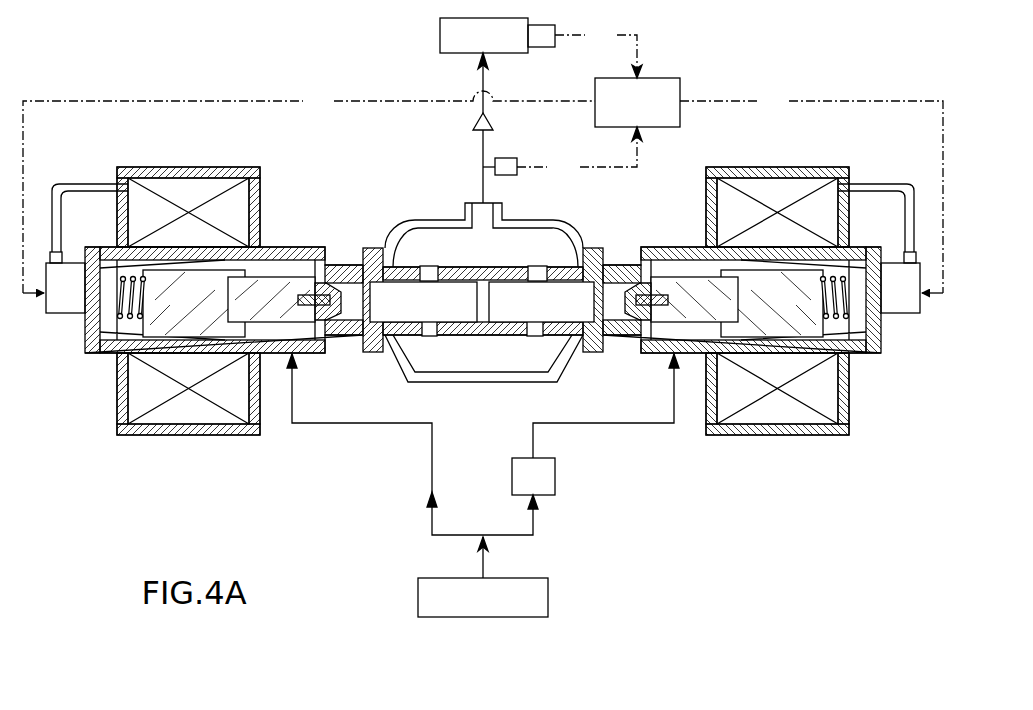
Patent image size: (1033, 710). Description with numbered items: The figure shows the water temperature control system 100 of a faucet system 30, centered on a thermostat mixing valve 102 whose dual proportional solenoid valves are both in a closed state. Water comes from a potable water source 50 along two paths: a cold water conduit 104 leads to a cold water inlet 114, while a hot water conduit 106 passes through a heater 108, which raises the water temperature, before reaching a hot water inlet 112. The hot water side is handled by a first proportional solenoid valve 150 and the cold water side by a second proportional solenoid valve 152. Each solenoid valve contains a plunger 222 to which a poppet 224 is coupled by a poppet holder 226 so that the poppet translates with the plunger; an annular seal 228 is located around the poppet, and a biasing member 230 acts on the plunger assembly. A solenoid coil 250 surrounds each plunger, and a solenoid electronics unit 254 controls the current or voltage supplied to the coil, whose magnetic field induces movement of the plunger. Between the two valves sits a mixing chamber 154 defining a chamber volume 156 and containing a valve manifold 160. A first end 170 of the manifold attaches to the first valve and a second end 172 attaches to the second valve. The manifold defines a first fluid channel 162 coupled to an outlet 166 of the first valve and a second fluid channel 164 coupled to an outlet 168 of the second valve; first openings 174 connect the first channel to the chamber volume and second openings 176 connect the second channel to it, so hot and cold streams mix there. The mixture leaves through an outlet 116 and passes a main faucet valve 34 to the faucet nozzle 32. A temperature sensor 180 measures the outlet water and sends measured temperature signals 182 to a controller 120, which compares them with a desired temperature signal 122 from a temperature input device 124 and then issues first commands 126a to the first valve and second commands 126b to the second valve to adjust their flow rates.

The faucet system 30 is at (128, 36).
The water temperature control system 100 is at (280, 52).
The thermostat mixing valve 102 is at (292, 157).
The faucet nozzle 32 is at (484, 110).
The temperature input device 124 is at (541, 36).
The desired temperature signal 122 is at (598, 51).
The controller 120 is at (637, 102).
The first commands 126a is at (811, 191).
The second commands 126b is at (309, 191).
The main faucet valve 34 is at (472, 124).
The temperature sensor 180 is at (505, 165).
The measured temperature signals 182 is at (562, 152).
The outlet 116 is at (470, 197).
The second end 172 is at (366, 240).
The first end 170 is at (597, 250).
The mixing chamber 154 is at (413, 222).
The chamber volume 156 is at (554, 244).
The second openings 176 is at (431, 265).
The first openings 174 is at (537, 265).
The outlet 168 is at (356, 280).
The outlet 166 is at (606, 280).
The second fluid channel 164 is at (423, 302).
The first fluid channel 162 is at (541, 302).
The valve manifold 160 is at (485, 330).
The plunger 222 is at (483, 303).
The poppet holder 226 is at (483, 299).
The seal 228 is at (322, 288).
The poppet 224 is at (340, 325).
The biasing member 230 is at (122, 320).
The solenoid electronics unit 254 is at (483, 248).
The solenoid coil 250 is at (215, 410).
The second proportional solenoid valve 152 is at (108, 414).
The first proportional solenoid valve 150 is at (858, 414).
The cold water inlet 114 is at (304, 358).
The hot water inlet 112 is at (664, 358).
The cold water conduit 104 is at (340, 425).
The hot water conduit 106 is at (625, 425).
The heater 108 is at (533, 476).
The potable water source 50 is at (483, 577).